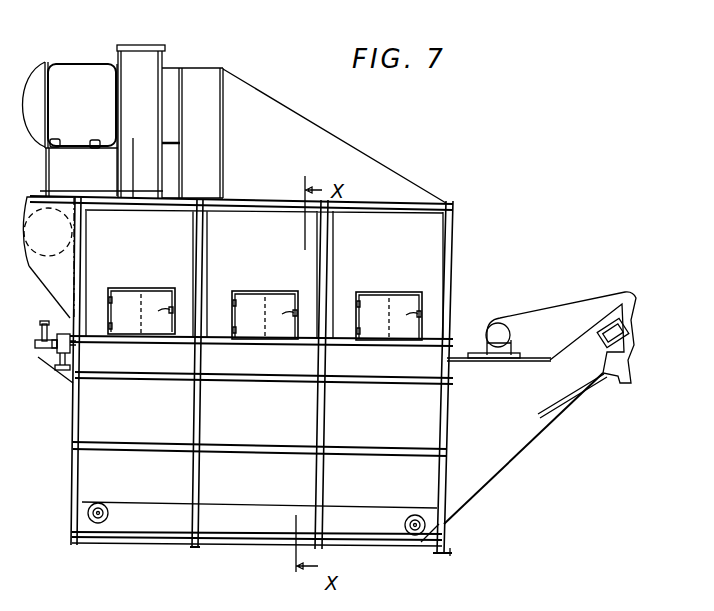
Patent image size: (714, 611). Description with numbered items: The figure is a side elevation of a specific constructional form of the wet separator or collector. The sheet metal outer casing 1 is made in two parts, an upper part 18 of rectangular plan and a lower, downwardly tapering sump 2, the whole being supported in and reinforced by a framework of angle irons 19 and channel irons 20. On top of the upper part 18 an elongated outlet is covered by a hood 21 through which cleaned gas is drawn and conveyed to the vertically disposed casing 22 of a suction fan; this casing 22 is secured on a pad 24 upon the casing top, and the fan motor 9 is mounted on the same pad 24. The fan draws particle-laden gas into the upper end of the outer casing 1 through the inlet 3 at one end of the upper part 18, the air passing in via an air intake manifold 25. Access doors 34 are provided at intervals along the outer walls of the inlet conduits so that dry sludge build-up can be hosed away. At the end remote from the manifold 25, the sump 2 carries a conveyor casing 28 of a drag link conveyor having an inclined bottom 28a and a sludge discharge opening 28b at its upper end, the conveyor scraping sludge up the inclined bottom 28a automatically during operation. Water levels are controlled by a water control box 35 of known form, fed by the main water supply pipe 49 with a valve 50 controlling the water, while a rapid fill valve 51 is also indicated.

The outer casing 1 is at (427, 425).
The sump 2 is at (422, 475).
The inlet 3 is at (48, 232).
The fan motor 9 is at (58, 73).
The upper part of the outer casing 18 is at (436, 240).
The angle irons 19 is at (447, 268).
The channel irons 20 is at (196, 546).
The hood 21 is at (328, 133).
The suction fan casing 22 is at (148, 70).
The pad 24 is at (136, 158).
The air intake manifold 25 is at (65, 268).
The conveyor casing 28 is at (485, 473).
The inclined bottom 28a is at (516, 462).
The sludge discharge opening 28b is at (620, 352).
The access doors 34 is at (123, 298).
The water control box 35 is at (68, 372).
The main water supply pipe 49 is at (60, 322).
The valve 50 is at (52, 333).
The rapid fill valve 51 is at (67, 363).